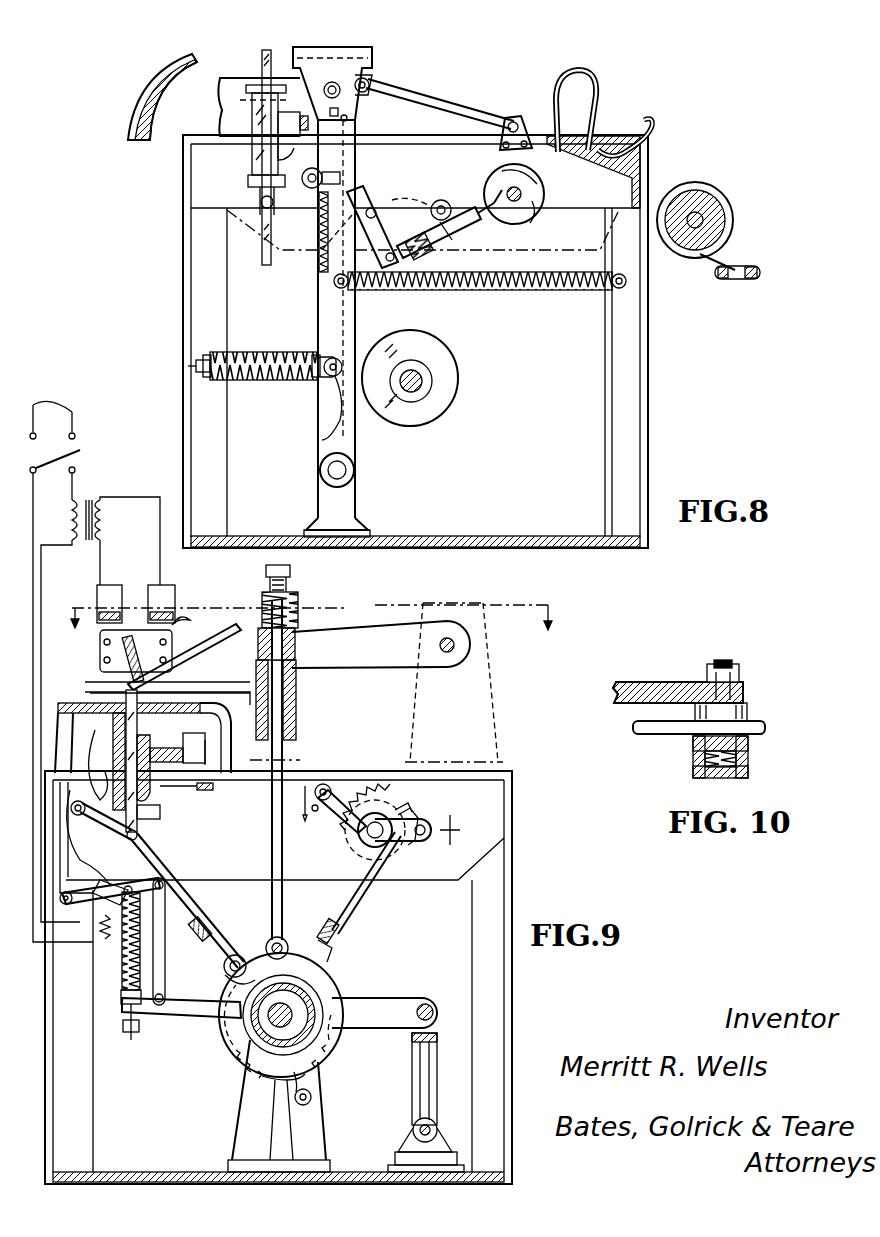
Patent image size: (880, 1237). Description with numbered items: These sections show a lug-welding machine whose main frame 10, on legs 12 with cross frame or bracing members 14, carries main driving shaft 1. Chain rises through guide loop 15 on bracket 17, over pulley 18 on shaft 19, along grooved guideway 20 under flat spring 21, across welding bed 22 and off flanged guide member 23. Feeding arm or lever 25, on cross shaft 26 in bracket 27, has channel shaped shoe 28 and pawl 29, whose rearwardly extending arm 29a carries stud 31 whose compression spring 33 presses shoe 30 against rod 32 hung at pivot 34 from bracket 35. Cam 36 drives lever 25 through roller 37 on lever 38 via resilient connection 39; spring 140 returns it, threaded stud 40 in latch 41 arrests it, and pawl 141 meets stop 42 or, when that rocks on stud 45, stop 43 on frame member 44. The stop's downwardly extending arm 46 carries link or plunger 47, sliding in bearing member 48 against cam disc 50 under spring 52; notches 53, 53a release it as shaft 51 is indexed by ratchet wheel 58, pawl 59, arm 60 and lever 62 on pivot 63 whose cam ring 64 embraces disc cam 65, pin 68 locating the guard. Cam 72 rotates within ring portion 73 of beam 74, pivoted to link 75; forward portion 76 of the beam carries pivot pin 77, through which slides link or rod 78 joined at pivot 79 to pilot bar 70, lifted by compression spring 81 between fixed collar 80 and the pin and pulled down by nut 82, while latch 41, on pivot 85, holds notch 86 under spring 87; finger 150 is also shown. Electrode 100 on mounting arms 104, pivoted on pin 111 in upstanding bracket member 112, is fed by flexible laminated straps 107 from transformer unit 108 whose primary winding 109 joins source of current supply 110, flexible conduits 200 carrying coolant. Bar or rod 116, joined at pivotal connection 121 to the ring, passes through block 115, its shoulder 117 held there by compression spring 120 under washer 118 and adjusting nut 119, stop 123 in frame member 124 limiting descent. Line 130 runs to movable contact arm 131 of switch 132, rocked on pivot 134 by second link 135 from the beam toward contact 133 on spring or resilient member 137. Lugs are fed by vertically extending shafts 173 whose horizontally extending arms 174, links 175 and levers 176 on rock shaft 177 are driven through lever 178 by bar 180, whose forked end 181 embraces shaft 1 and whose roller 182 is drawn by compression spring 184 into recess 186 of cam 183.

In FIG. 8, the main driving shaft 1 is at (430, 384).
In FIG. 9, the main driving shaft 1 is at (237, 1045).
In FIG. 8, the main frame 10 is at (415, 315).
In FIG. 9, the main frame 10 is at (512, 812).
In FIG. 9, the legs 12 is at (92, 1130).
In FIG. 9, the cross frame or bracing members 14 is at (310, 747).
In FIG. 8, the guide loop 15 is at (737, 268).
In FIG. 9, the guide loop 15 is at (380, 815).
In FIG. 8, the bracket 17 is at (665, 182).
In FIG. 8, the pulley 18 is at (722, 216).
In FIG. 8, the shaft 19 is at (703, 226).
In FIG. 8, the grooved guideway 20 is at (640, 132).
In FIG. 8, the flat spring 21 is at (597, 92).
In FIG. 8, the welding bed 22 is at (232, 80).
In FIG. 8, the flanged guide member 23 is at (152, 72).
In FIG. 8, the feeding arm or lever 25 is at (320, 310).
In FIG. 9, the feeding arm or lever 25 is at (214, 730).
In FIG. 8, the cross shaft 26 is at (329, 470).
In FIG. 8, the bracket 27 is at (328, 500).
In FIG. 8, the channel shaped shoe 28 is at (345, 50).
In FIG. 9, the channel shaped shoe 28 is at (355, 1172).
In FIG. 8, the pawl 29 is at (305, 48).
In FIG. 10, the pawl 29 is at (665, 685).
In FIG. 8, the rearwardly extending arm 29a is at (369, 84).
In FIG. 10, the shoe 30 is at (749, 752).
In FIG. 10, the stud 31 is at (749, 770).
In FIG. 8, the rod 32 is at (455, 110).
In FIG. 10, the rod 32 is at (660, 736).
In FIG. 10, the compression spring 33 is at (694, 768).
In FIG. 8, the pivot 34 is at (525, 112).
In FIG. 8, the bracket 35 is at (500, 130).
In FIG. 8, the cam 36 is at (448, 350).
In FIG. 8, the roller 37 is at (330, 402).
In FIG. 8, the lever 38 is at (322, 376).
In FIG. 8, the resilient connection 39 is at (285, 352).
In FIG. 8, the threaded stud 40 is at (317, 120).
In FIG. 9, the threaded stud 40 is at (165, 712).
In FIG. 8, the latch 41 is at (278, 122).
In FIG. 9, the latch 41 is at (160, 812).
In FIG. 8, the stop 42 is at (352, 215).
In FIG. 8, the stop 43 is at (441, 200).
In FIG. 8, the frame member 44 is at (386, 104).
In FIG. 8, the stud 45 is at (381, 210).
In FIG. 8, the downwardly extending arm 46 is at (334, 283).
In FIG. 8, the link or plunger 47 is at (448, 248).
In FIG. 8, the bearing member 48 is at (482, 230).
In FIG. 8, the cam disc 50 is at (544, 187).
In FIG. 8, the shaft 51 is at (522, 211).
In FIG. 8, the spring 52 is at (439, 233).
In FIG. 8, the notch 53 is at (486, 190).
In FIG. 8, the notch 53a is at (542, 205).
In FIG. 9, the ratchet wheel 58 is at (350, 840).
In FIG. 9, the pawl 59 is at (420, 845).
In FIG. 9, the arm 60 is at (430, 824).
In FIG. 9, the lever 62 is at (362, 905).
In FIG. 9, the pivot 63 is at (400, 815).
In FIG. 9, the cam ring 64 is at (325, 972).
In FIG. 9, the disc cam 65 is at (425, 845).
In FIG. 9, the pin 68 is at (328, 790).
In FIG. 8, the pilot bar 70 is at (268, 56).
In FIG. 9, the pilot bar 70 is at (140, 835).
In FIG. 9, the cam 72 is at (320, 1044).
In FIG. 9, the ring portion 73 is at (322, 1032).
In FIG. 9, the beam 74 is at (395, 1005).
In FIG. 9, the link 75 is at (438, 1070).
In FIG. 9, the forward portion of the beam 76 is at (172, 1002).
In FIG. 9, the pivot pin 77 is at (143, 998).
In FIG. 9, the link or rod 78 is at (172, 882).
In FIG. 9, the pivot 79 is at (192, 848).
In FIG. 9, the fixed collar 80 is at (163, 940).
In FIG. 9, the compression spring 81 is at (125, 965).
In FIG. 9, the nut 82 is at (141, 1027).
In FIG. 8, the pivot 85 is at (262, 162).
In FIG. 9, the pivot 85 is at (207, 748).
In FIG. 9, the notch 86 is at (120, 745).
In FIG. 9, the spring 87 is at (183, 745).
In FIG. 9, the electrode 100 is at (105, 676).
In FIG. 9, the mounting arms 104 is at (181, 657).
In FIG. 9, the flexible laminated straps 107 is at (123, 600).
In FIG. 9, the transformer unit 108 is at (97, 500).
In FIG. 9, the primary winding 109 is at (80, 498).
In FIG. 9, the source of current supply 110 is at (40, 425).
In FIG. 9, the pin 111 is at (455, 645).
In FIG. 9, the upstanding bracket member 112 is at (503, 737).
In FIG. 9, the block 115 is at (305, 633).
In FIG. 9, the bar or rod 116 is at (283, 760).
In FIG. 9, the shoulder 117 is at (296, 645).
In FIG. 9, the washer 118 is at (299, 600).
In FIG. 9, the adjusting nut 119 is at (291, 578).
In FIG. 9, the compression spring 120 is at (198, 607).
In FIG. 9, the pivotal connection 121 is at (289, 946).
In FIG. 9, the stop 123 is at (296, 680).
In FIG. 9, the frame member 124 is at (297, 722).
In FIG. 9, the line 130 is at (42, 585).
In FIG. 9, the movable contact arm 131 is at (126, 885).
In FIG. 9, the switch 132 is at (70, 950).
In FIG. 9, the contact 133 is at (93, 1000).
In FIG. 9, the pivot 134 is at (137, 840).
In FIG. 9, the second link 135 is at (163, 958).
In FIG. 9, the spring or resilient member 137 is at (98, 950).
In FIG. 8, the spring 140 is at (468, 290).
In FIG. 8, the pawl 141 is at (324, 180).
In FIG. 9, the finger 150 is at (182, 622).
In FIG. 9, the vertically extending shafts 173 is at (200, 694).
In FIG. 9, the horizontally extending arms 174 is at (213, 790).
In FIG. 9, the links 175 is at (113, 760).
In FIG. 9, the levers 176 is at (108, 776).
In FIG. 9, the rock shaft 177 is at (100, 878).
In FIG. 9, the lever 178 is at (112, 882).
In FIG. 9, the bar 180 is at (168, 892).
In FIG. 9, the forked end 181 is at (320, 1054).
In FIG. 9, the roller 182 is at (236, 955).
In FIG. 9, the cam 183 is at (238, 1065).
In FIG. 9, the compression spring 184 is at (296, 1098).
In FIG. 9, the recess 186 is at (240, 955).
In FIG. 9, the flexible conduits 200 is at (180, 620).